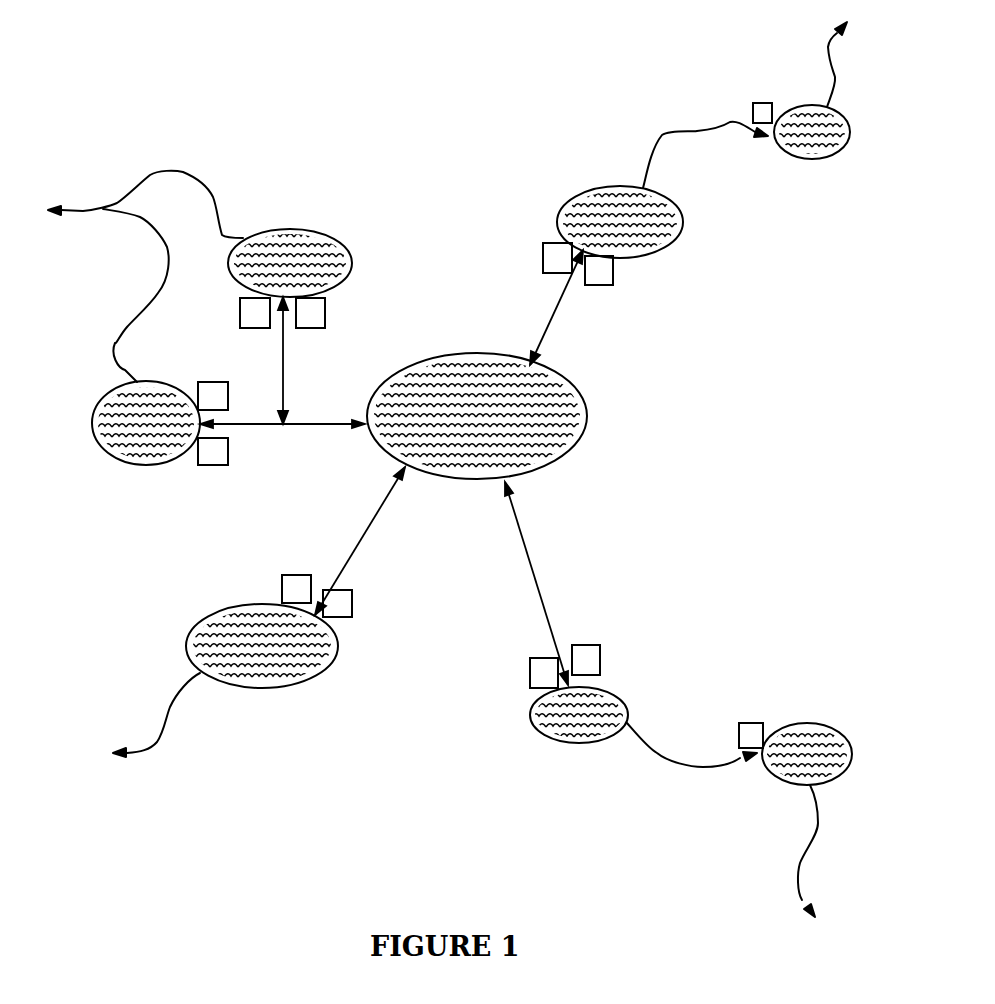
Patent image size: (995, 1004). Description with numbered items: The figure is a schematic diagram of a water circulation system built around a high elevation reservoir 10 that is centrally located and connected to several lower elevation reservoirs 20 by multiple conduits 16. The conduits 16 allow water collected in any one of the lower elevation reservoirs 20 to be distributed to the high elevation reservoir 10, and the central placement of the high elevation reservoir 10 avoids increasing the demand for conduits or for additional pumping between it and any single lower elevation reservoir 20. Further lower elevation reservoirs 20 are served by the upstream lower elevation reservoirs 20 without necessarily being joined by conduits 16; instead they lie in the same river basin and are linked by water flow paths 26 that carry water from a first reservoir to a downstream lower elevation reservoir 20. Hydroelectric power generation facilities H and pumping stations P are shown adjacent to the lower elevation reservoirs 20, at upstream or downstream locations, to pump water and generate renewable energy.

The high elevation reservoir 10 is at (492, 416).
The lower elevation reservoirs 20 is at (477, 444).
The conduits 16 is at (393, 467).
The water flow paths 26 is at (447, 469).